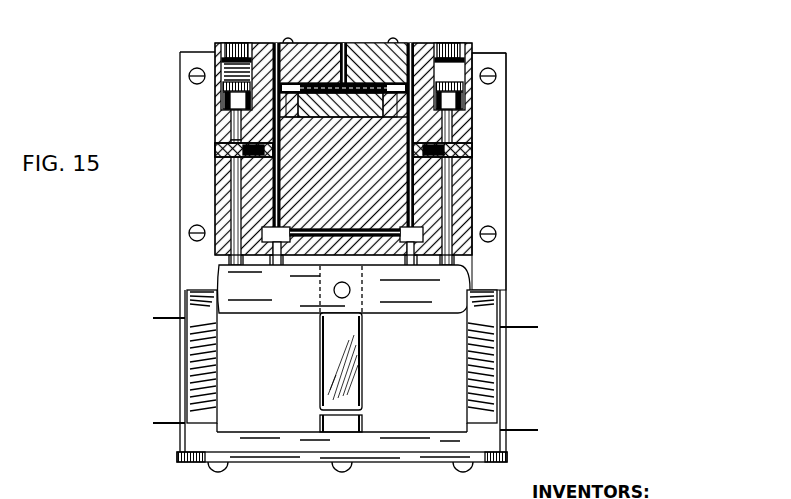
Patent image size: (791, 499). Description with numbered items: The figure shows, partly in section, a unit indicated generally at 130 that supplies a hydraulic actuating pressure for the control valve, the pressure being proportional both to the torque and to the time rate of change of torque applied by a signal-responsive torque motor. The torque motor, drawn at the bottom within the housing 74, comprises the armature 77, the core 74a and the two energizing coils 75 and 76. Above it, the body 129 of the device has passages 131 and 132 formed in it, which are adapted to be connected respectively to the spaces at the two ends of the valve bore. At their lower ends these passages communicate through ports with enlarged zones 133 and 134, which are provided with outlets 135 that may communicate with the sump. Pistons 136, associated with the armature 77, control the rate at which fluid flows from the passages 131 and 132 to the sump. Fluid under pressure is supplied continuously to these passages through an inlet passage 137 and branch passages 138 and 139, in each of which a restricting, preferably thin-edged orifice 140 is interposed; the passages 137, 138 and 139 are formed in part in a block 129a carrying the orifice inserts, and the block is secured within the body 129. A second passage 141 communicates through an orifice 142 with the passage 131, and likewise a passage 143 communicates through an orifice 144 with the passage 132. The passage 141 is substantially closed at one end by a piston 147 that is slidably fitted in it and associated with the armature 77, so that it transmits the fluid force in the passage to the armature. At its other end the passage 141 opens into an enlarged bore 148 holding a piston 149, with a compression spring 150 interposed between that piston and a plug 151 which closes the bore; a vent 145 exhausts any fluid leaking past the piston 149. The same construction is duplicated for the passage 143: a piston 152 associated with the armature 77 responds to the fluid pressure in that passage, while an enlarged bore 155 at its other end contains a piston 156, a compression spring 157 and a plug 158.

The housing 74 is at (180, 406).
The core 74a is at (249, 435).
The energizing coil 75 is at (207, 340).
The energizing coil 76 is at (472, 340).
The armature 77 is at (426, 307).
The body 129 is at (216, 133).
The block 129a is at (313, 50).
The device 130 is at (507, 144).
The passage 131 is at (237, 192).
The passage 132 is at (413, 201).
The enlarged zone 133 is at (262, 232).
The enlarged zone 134 is at (448, 218).
The outlet 135 is at (341, 232).
The piston 136 is at (272, 262).
The inlet passage 137 is at (344, 46).
The branch passage 138 is at (290, 96).
The branch passage 139 is at (380, 96).
The orifice 140 is at (326, 94).
The second passage 141 is at (232, 118).
The orifice 142 is at (265, 150).
The passage 143 is at (470, 123).
The orifice 144 is at (414, 150).
The vent 145 is at (238, 63).
The piston 147 is at (231, 263).
The enlarged bore 148 is at (240, 101).
The piston 149 is at (235, 86).
The compression spring 150 is at (220, 64).
The plug 151 is at (226, 45).
The piston 152 is at (455, 262).
The enlarged bore 155 is at (456, 101).
The piston 156 is at (456, 88).
The compression spring 157 is at (463, 60).
The plug 158 is at (457, 45).